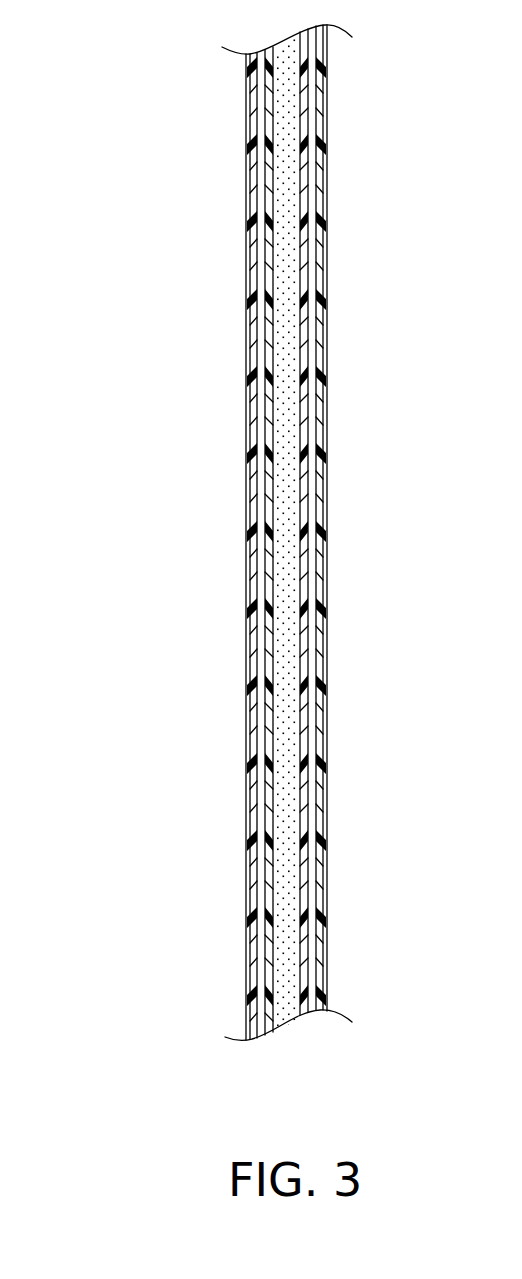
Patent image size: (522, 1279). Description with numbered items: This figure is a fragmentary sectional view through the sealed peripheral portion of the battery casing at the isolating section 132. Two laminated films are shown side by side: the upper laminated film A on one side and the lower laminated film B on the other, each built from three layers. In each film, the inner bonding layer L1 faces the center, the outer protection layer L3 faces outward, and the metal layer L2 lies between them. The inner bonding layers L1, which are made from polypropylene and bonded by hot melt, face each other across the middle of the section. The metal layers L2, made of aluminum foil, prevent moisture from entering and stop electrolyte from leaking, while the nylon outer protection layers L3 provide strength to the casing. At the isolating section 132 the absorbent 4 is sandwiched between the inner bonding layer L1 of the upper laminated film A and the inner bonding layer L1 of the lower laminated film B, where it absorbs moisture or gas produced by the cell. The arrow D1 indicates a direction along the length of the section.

The isolating section 132 is at (220, 310).
The first direction D1 is at (33, 650).
The upper laminated film A is at (247, 430).
The lower laminated film B is at (326, 430).
The inner bonding layer L1 is at (272, 482).
The metal layer L2 is at (258, 527).
The outer protection layer L3 is at (253, 565).
The absorbent 4 is at (287, 643).